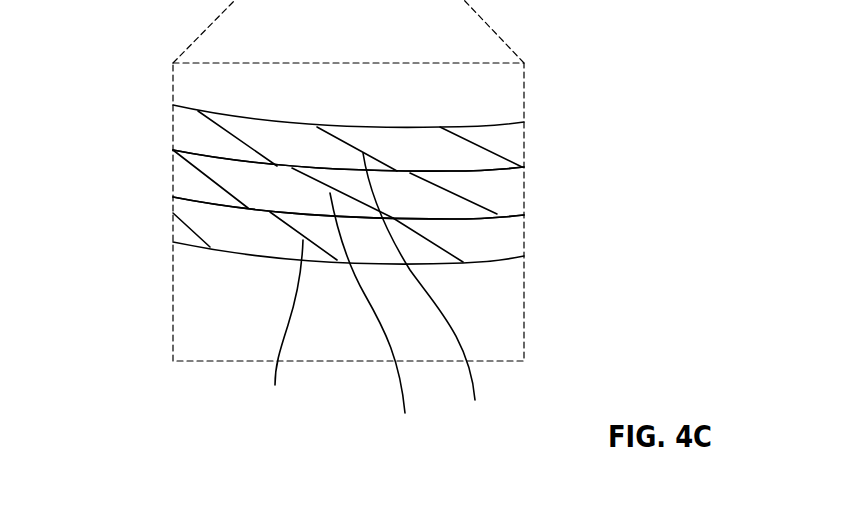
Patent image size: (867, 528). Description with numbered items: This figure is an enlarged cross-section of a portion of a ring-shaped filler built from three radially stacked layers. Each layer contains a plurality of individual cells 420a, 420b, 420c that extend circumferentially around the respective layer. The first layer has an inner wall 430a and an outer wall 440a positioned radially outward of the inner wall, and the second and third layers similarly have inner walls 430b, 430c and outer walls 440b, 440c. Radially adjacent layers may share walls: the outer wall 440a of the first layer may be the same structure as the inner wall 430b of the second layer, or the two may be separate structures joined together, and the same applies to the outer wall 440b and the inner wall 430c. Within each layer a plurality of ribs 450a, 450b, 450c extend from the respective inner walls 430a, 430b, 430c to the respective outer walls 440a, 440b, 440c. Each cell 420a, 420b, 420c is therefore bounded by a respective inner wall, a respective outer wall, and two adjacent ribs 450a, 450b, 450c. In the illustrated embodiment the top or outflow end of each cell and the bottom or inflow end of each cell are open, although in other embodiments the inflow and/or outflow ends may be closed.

The cell 420a is at (185, 123).
The cell 420b is at (188, 180).
The cell 420c is at (197, 218).
The inner wall 430a is at (440, 127).
The inner wall 430b is at (478, 170).
The inner wall 430c is at (480, 217).
The outer wall 440a is at (452, 168).
The outer wall 440b is at (497, 213).
The outer wall 440c is at (483, 262).
The rib 450a is at (434, 291).
The rib 450b is at (383, 320).
The rib 450c is at (275, 328).